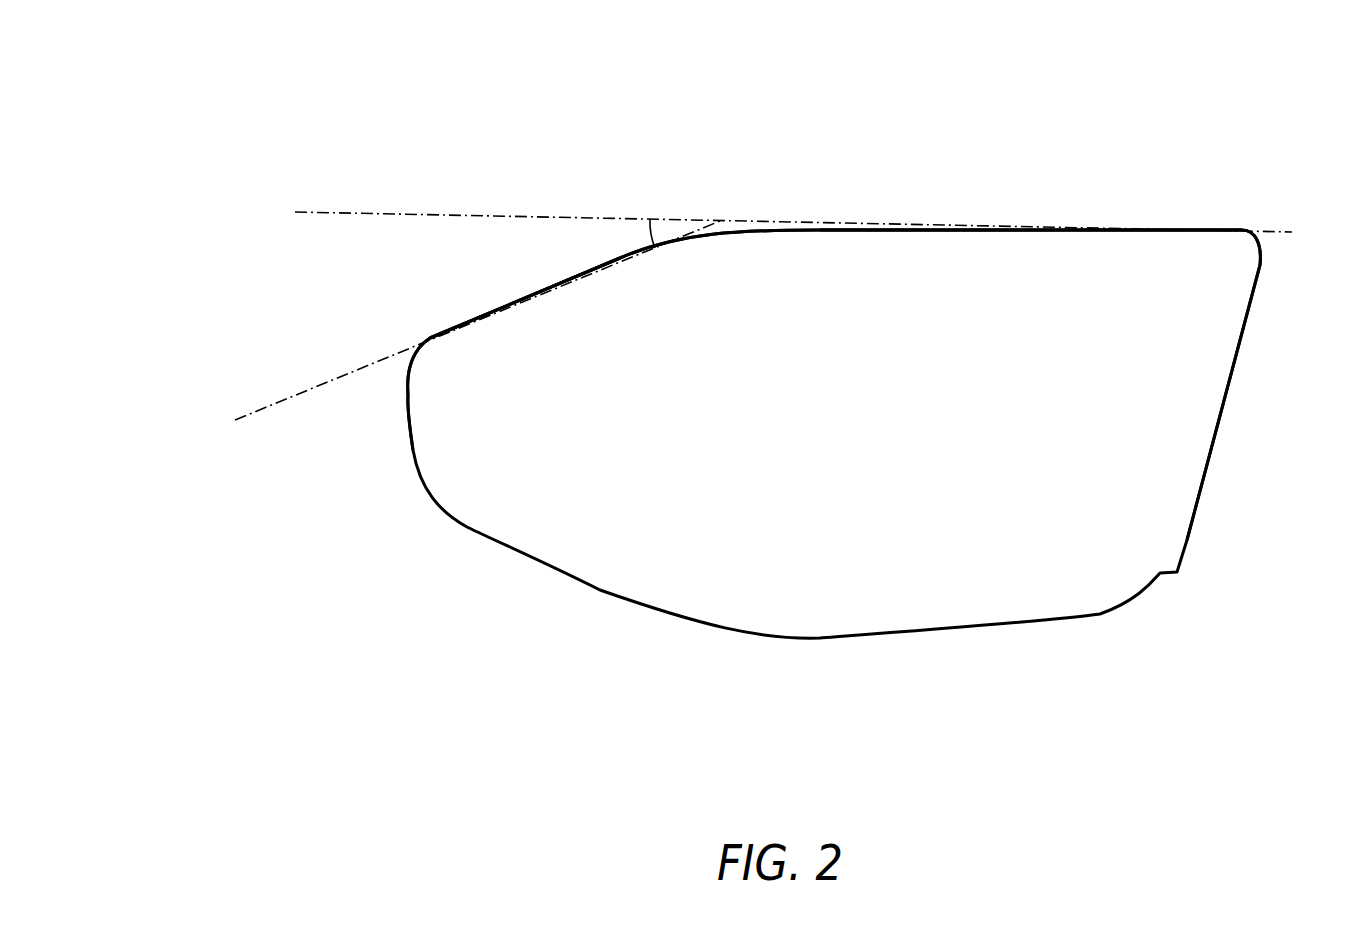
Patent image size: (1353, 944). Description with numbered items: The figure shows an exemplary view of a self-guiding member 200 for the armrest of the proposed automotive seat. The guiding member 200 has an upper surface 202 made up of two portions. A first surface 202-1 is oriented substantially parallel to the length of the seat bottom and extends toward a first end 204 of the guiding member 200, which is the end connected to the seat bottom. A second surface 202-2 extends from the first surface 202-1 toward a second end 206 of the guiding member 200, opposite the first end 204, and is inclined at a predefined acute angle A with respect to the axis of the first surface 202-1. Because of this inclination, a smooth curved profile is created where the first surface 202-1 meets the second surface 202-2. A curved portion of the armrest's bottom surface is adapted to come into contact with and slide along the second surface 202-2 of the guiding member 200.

The self-guiding member 200 is at (264, 90).
The upper surface 202 is at (776, 182).
The first surface 202-1 is at (932, 224).
The second surface 202-2 is at (504, 305).
The first end 204 is at (1240, 401).
The second end 206 is at (400, 427).